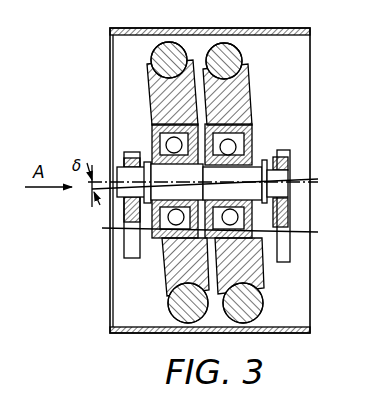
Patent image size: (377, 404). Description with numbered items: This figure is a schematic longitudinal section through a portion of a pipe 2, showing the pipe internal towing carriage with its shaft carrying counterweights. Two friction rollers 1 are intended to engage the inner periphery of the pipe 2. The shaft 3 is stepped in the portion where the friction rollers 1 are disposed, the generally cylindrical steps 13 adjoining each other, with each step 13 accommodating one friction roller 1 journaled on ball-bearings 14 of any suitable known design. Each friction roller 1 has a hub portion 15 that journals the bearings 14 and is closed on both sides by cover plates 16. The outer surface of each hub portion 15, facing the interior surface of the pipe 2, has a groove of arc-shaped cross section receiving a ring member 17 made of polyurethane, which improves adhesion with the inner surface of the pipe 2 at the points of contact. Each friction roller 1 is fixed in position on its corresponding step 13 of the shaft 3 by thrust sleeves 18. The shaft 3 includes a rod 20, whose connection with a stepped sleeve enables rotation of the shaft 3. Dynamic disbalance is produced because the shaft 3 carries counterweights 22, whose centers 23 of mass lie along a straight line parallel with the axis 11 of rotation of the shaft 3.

The friction roller 1 is at (186, 178).
The pipe 2 is at (296, 32).
The shaft 3 is at (308, 193).
The axis of rotation 11 is at (303, 185).
The step 13 is at (263, 242).
The ball-bearing 14 is at (166, 124).
The hub portion 15 is at (244, 90).
The cover plate 16 is at (247, 125).
The ring member 17 is at (243, 53).
The thrust sleeve 18 is at (156, 160).
The rod 20 is at (184, 184).
The counterweight 22 is at (289, 253).
The center of mass 23 is at (290, 237).